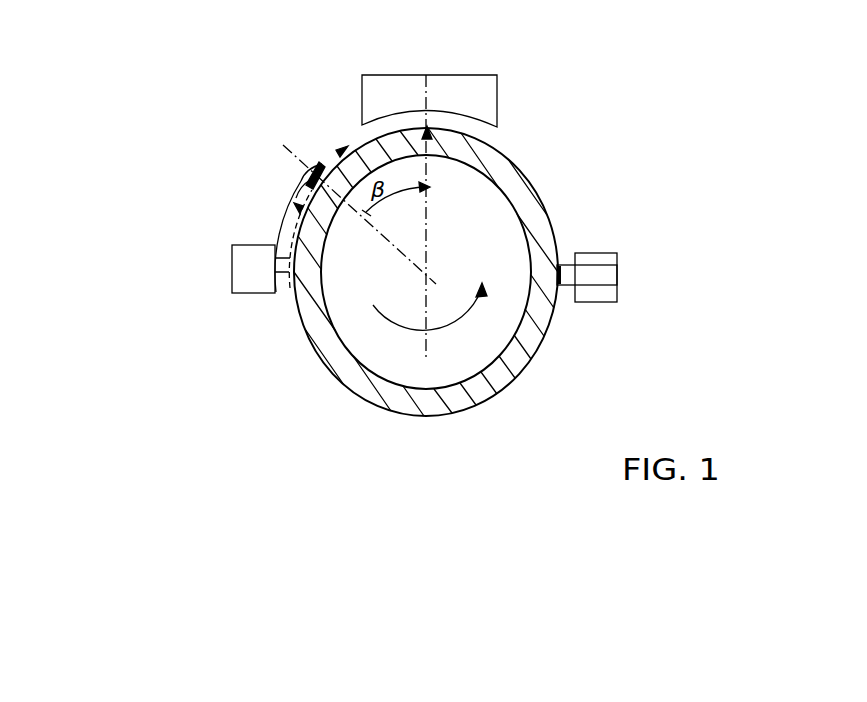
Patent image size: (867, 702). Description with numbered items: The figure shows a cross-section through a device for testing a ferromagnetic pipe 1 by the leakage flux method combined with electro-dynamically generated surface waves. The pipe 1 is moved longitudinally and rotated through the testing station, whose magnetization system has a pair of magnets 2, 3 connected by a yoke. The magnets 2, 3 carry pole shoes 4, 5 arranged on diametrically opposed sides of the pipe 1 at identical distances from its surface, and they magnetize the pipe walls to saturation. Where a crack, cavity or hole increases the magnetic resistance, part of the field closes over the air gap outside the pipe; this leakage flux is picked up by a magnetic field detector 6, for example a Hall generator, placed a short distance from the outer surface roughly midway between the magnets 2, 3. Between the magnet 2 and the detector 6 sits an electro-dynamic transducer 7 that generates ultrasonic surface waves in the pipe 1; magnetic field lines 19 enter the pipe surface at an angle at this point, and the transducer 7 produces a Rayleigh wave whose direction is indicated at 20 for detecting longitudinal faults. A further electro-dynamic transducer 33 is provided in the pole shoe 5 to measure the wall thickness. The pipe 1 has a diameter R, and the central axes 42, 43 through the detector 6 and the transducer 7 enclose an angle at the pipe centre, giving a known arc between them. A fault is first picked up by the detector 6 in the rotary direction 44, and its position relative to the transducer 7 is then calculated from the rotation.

The pipe 1 is at (460, 398).
The magnet 2 is at (255, 273).
The magnet 3 is at (602, 296).
The pole shoe 4 is at (270, 290).
The pole shoe 5 is at (575, 300).
The magnetic field detector 6 is at (485, 98).
The electro-dynamic transducer 7 is at (307, 176).
The magnetic field lines 19 is at (290, 192).
The direction of the Rayleigh wave 20 is at (378, 132).
The electro-dynamic transducer 33 is at (603, 278).
The central axis 42 is at (430, 72).
The central axis 43 is at (283, 140).
The rotary direction 44 is at (470, 315).
The diameter of the pipe R is at (422, 417).